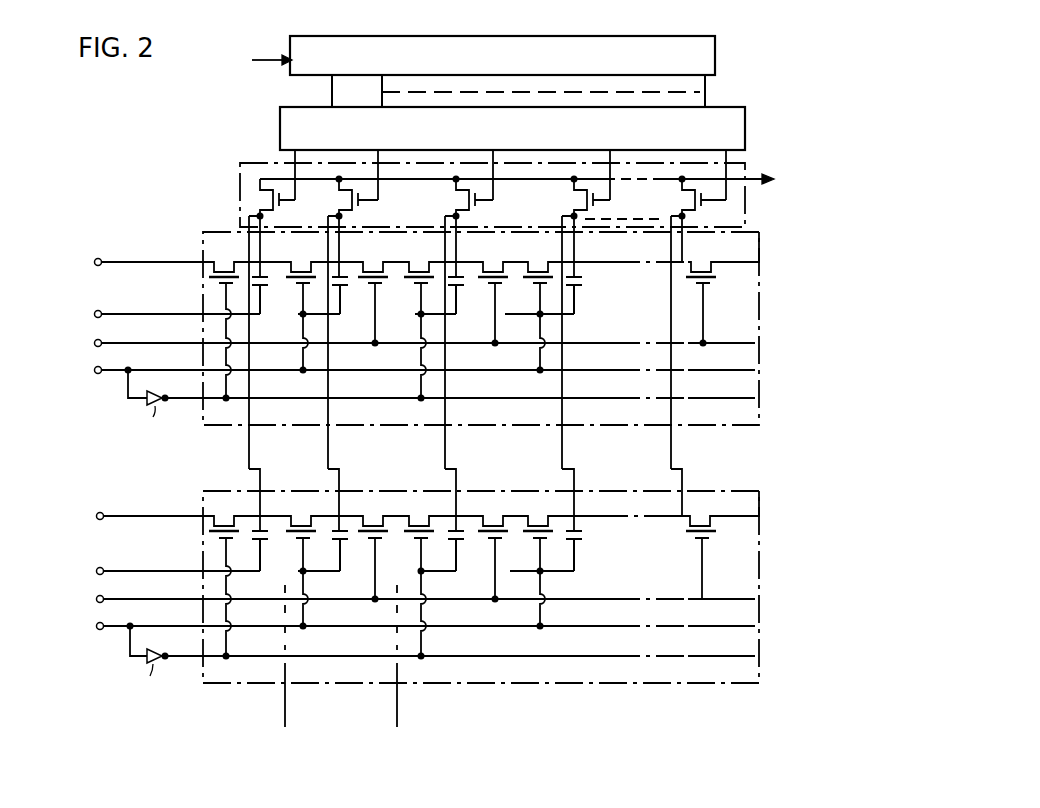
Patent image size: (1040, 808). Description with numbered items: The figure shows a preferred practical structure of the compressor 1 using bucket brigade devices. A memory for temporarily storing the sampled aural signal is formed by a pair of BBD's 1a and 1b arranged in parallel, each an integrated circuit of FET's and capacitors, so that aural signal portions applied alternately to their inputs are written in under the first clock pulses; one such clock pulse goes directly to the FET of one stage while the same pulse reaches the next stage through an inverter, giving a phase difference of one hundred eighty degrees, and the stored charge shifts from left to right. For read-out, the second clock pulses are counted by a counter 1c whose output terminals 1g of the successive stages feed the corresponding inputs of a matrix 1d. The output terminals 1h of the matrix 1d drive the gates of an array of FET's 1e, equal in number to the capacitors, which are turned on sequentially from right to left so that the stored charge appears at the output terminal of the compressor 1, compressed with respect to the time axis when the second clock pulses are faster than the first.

The compressor 1 is at (519, 114).
The first BBD 1a is at (759, 303).
The second BBD 1b is at (759, 548).
The counter 1c is at (715, 62).
The matrix 1d is at (745, 127).
The array of FETs 1e is at (240, 195).
The output terminals of the counter 1g is at (332, 92).
The output terminals of the matrix 1h is at (296, 153).